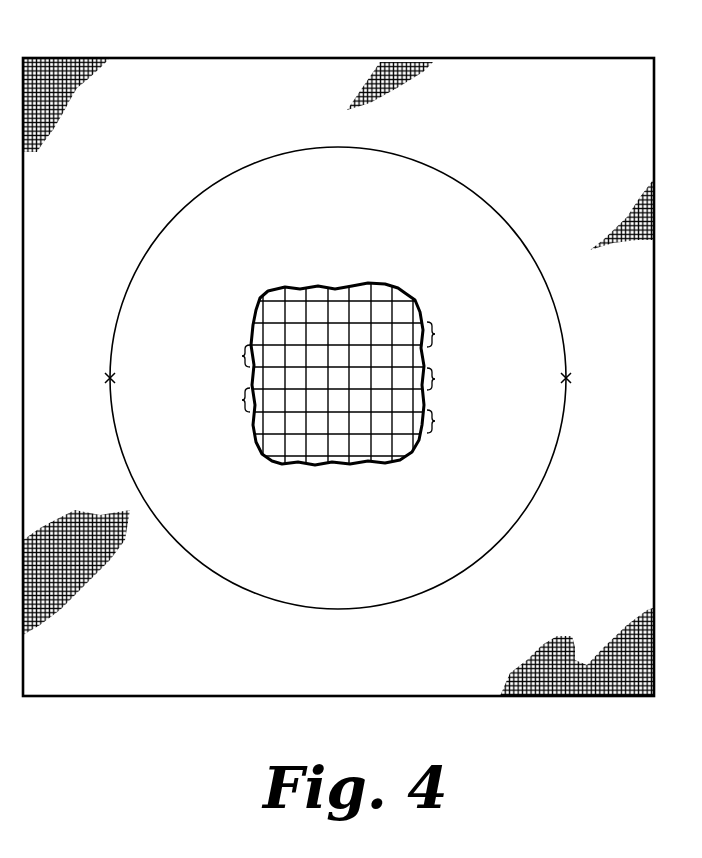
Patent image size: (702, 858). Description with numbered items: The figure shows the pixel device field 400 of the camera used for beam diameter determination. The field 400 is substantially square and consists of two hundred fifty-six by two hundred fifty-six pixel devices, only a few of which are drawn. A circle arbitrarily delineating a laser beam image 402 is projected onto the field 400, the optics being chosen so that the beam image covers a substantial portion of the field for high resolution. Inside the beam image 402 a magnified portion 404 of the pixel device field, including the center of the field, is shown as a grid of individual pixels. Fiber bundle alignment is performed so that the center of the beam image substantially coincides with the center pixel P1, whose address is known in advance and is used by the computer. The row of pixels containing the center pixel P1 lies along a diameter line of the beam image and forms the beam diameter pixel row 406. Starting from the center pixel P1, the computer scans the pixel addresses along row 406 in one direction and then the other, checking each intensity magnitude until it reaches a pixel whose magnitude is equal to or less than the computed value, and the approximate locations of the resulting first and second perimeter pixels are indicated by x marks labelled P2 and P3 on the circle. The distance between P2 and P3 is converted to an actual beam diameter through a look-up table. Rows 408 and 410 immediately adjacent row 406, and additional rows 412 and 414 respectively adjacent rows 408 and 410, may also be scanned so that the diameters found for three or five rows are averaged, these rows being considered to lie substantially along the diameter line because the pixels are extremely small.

The camera pixel device field 400 is at (526, 58).
The laser beam image 402 is at (501, 211).
The magnified portion of the pixel device field 404 is at (406, 291).
The beam diameter pixel row 406 is at (454, 379).
The pixel row 408 is at (224, 355).
The pixel row 410 is at (224, 401).
The additional pixel row 412 is at (454, 335).
The additional pixel row 414 is at (454, 423).
The center pixel P1 is at (338, 379).
The first perimeter pixel P2 is at (108, 376).
The second perimeter pixel P3 is at (568, 376).